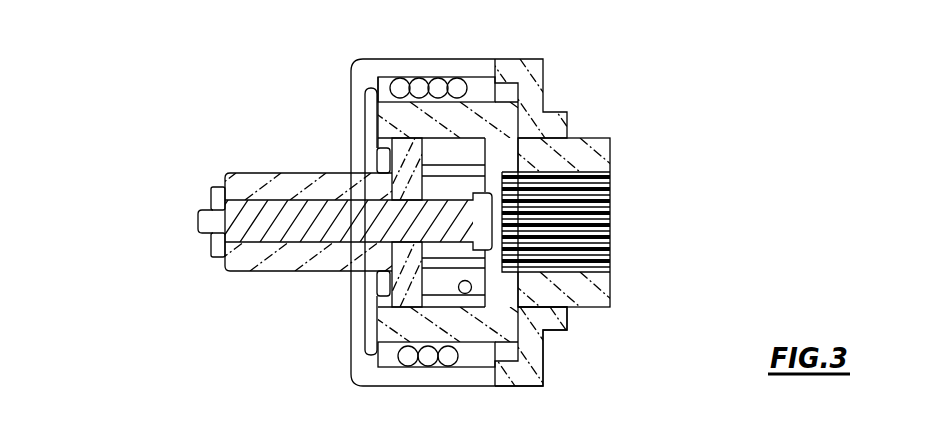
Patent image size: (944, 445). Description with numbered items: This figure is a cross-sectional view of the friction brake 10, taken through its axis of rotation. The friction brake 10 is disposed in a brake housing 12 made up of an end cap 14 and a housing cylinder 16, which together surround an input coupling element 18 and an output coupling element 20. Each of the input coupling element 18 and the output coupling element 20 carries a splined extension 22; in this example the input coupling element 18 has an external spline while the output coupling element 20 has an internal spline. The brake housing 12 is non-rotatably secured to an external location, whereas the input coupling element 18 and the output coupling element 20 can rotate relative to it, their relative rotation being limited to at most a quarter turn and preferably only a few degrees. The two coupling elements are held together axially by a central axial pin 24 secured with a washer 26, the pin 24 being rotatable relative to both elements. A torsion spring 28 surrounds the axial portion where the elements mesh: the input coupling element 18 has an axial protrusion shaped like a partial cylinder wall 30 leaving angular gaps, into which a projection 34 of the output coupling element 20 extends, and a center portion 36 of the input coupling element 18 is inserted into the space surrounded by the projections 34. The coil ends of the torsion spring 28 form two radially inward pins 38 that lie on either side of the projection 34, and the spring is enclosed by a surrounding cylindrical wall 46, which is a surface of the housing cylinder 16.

The friction brake 10 is at (222, 81).
The brake housing 12 is at (545, 62).
The end cap 14 is at (545, 362).
The housing cylinder 16 is at (383, 383).
The input coupling element 18 is at (258, 268).
The output coupling element 20 is at (612, 148).
The splined extension 22 is at (288, 173).
The central axial pin 24 is at (243, 222).
The washer 26 is at (213, 257).
The torsion spring 28 is at (401, 80).
The partial cylinder wall 30 is at (458, 325).
The projection 34 is at (493, 322).
The center portion 36 is at (404, 272).
The inward pins 38 is at (573, 308).
The surrounding cylindrical wall 46 is at (567, 118).